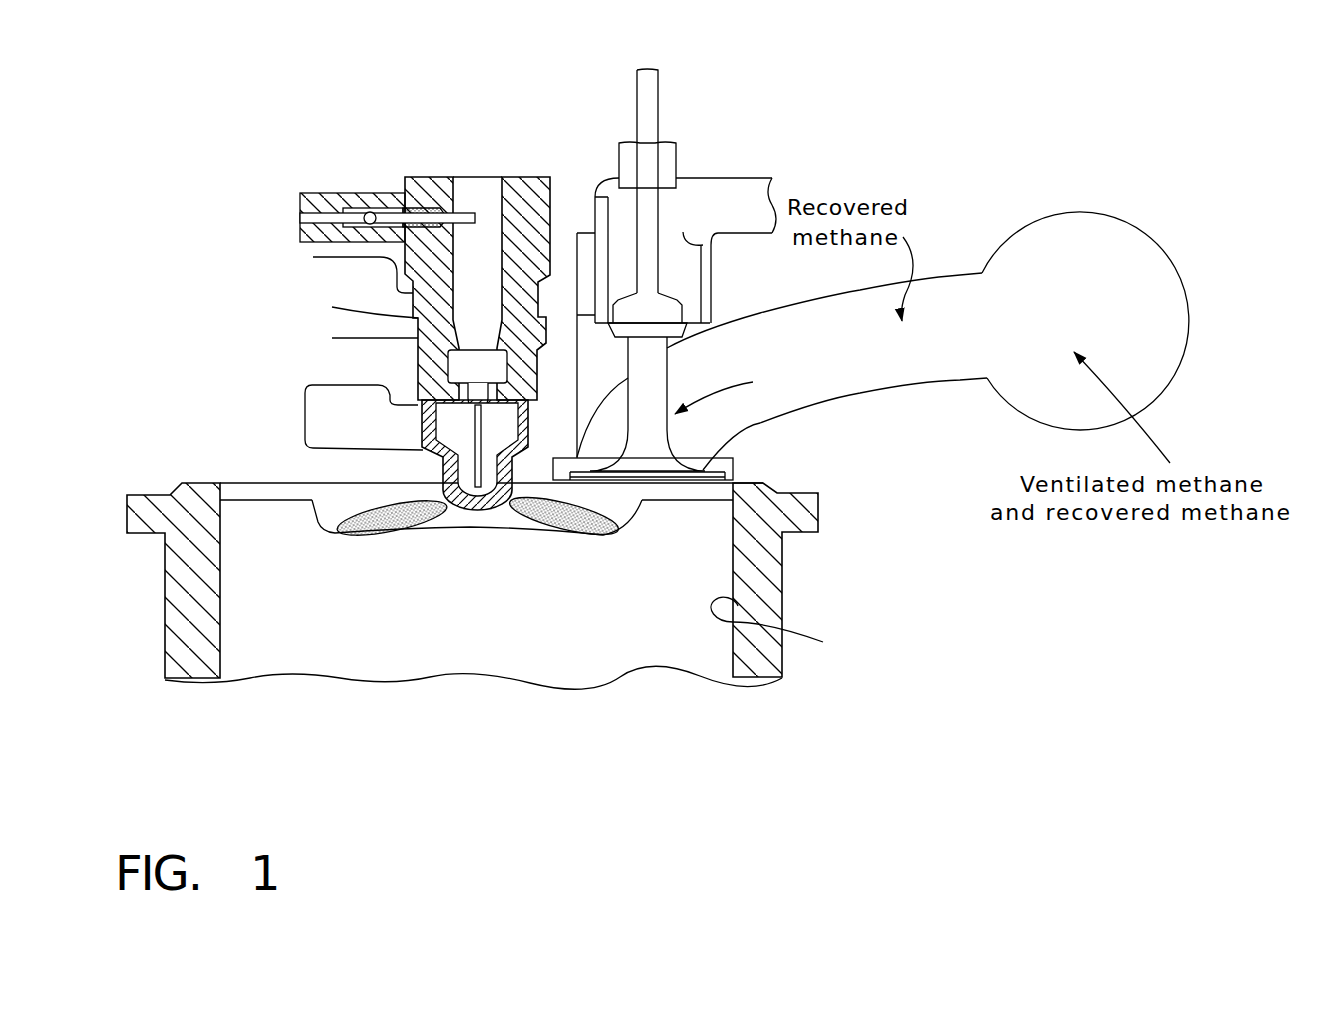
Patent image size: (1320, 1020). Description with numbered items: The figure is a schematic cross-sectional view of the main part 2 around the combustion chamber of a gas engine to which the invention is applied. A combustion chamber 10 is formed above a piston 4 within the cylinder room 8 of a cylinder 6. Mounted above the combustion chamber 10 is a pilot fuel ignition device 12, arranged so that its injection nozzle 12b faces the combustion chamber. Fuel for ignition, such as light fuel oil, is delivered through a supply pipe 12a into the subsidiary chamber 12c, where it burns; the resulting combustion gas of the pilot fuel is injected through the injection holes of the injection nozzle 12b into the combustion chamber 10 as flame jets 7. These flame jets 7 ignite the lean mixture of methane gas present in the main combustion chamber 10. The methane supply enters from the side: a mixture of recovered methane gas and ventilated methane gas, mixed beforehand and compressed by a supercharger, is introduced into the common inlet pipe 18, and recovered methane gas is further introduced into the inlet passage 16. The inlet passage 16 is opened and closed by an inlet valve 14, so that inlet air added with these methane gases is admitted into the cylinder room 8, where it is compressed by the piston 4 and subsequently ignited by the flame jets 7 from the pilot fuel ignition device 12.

The main part 2 is at (483, 613).
The piston 4 is at (680, 530).
The cylinder 6 is at (776, 625).
The flame jets 7 is at (390, 528).
The cylinder room 8 is at (468, 617).
The combustion chamber 10 is at (330, 520).
The pilot fuel ignition device 12 is at (396, 291).
The supply pipe 12a is at (300, 215).
The injection nozzle 12b is at (448, 368).
The subsidiary chamber 12c is at (420, 448).
The inlet valve 14 is at (648, 368).
The inlet passage 16 is at (855, 363).
The common inlet pipe 18 is at (1053, 213).